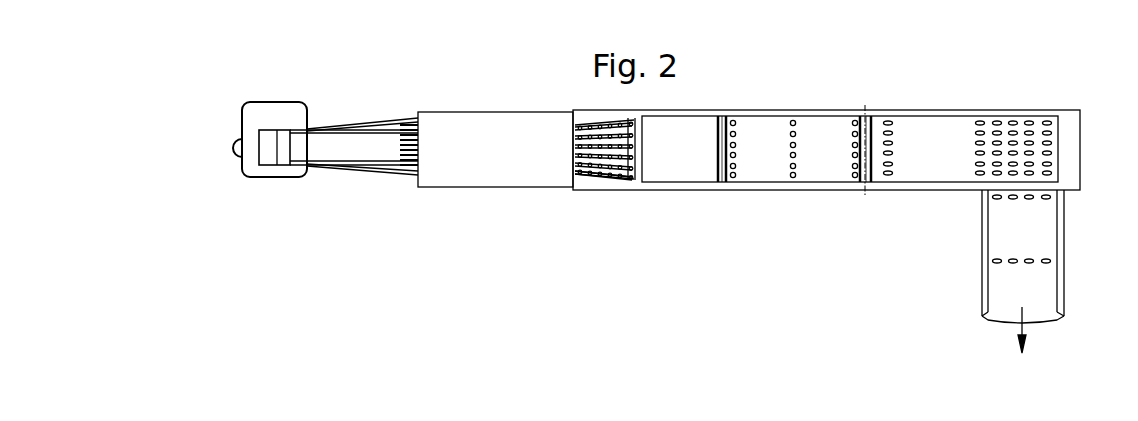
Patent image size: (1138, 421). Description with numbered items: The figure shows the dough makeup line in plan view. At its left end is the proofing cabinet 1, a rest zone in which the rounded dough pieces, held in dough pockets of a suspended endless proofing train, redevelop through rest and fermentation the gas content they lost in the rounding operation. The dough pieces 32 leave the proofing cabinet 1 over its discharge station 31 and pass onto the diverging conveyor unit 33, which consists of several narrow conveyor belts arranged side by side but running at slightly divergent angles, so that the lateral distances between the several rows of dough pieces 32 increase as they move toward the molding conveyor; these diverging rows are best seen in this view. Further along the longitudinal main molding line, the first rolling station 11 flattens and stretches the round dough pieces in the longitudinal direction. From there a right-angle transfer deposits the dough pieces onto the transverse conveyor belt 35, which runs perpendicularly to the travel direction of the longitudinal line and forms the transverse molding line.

The proofing cabinet 1 is at (461, 112).
The first rolling station 11 is at (876, 110).
The discharge station 31 is at (576, 124).
The dough pieces 32 is at (611, 124).
The diverging conveyor unit 33 is at (607, 178).
The transverse conveyor belt 35 is at (1064, 231).